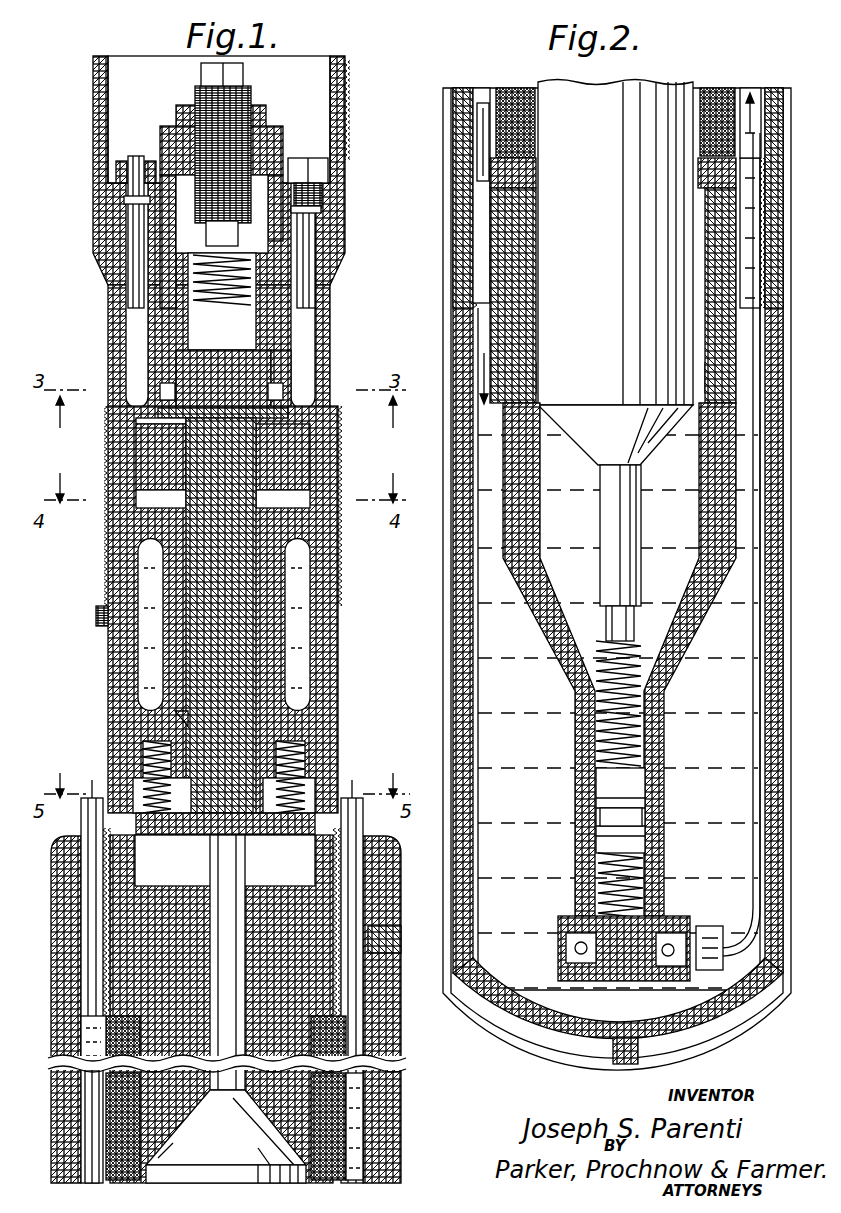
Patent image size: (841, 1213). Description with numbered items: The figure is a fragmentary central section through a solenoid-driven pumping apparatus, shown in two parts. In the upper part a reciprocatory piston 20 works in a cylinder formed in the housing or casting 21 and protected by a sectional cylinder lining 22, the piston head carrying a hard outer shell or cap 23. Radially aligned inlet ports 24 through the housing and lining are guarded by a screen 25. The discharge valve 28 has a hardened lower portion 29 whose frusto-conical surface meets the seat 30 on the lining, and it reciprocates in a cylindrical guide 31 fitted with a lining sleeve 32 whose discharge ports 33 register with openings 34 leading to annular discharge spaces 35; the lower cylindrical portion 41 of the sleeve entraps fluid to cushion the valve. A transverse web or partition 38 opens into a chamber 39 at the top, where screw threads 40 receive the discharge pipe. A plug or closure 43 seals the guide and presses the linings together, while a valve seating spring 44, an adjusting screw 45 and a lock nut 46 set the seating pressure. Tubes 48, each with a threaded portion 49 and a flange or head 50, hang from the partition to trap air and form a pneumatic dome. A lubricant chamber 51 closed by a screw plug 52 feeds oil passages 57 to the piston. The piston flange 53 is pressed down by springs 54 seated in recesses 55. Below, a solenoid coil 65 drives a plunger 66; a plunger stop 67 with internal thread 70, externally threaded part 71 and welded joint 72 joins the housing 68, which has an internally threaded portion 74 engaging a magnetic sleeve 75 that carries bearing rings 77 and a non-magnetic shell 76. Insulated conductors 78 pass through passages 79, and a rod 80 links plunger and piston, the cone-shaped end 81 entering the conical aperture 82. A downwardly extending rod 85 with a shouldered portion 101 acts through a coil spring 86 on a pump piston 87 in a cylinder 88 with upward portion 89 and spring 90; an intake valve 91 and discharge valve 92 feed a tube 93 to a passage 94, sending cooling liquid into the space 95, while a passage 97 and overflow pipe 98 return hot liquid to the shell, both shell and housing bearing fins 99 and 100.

In FIG. 1, the reciprocatory piston 20 is at (185, 497).
In FIG. 1, the housing or casting 21 is at (145, 455).
In FIG. 1, the cylinder lining 22 is at (140, 555).
In FIG. 1, the outer shell or cap 23 is at (256, 438).
In FIG. 1, the inlet ports 24 is at (150, 490).
In FIG. 1, the screen 25 is at (332, 520).
In FIG. 1, the valve 28 is at (190, 357).
In FIG. 1, the lower portion of valve 29 is at (292, 345).
In FIG. 1, the seat 30 is at (132, 418).
In FIG. 1, the cylindrical guide 31 is at (324, 300).
In FIG. 1, the lining sleeve 32 is at (178, 318).
In FIG. 1, the discharge ports or openings 33 is at (305, 358).
In FIG. 1, the openings 34 is at (152, 383).
In FIG. 1, the annular space 35 is at (125, 308).
In FIG. 1, the transverse web or partition 38 is at (314, 188).
In FIG. 1, the chamber 39 is at (219, 119).
In FIG. 1, the screw threads 40 is at (338, 62).
In FIG. 1, the lower cylindrical portion of lining member 41 is at (155, 400).
In FIG. 1, the plug or closure 43 is at (270, 132).
In FIG. 1, the valve seating spring 44 is at (152, 277).
In FIG. 1, the adjusting screw 45 is at (190, 82).
In FIG. 1, the lock nut 46 is at (170, 106).
In FIG. 1, the pipes or tubes 48 is at (120, 233).
In FIG. 1, the threaded portion 49 is at (118, 193).
In FIG. 1, the enlarged flange or head 50 is at (108, 165).
In FIG. 1, the chamber 51 is at (300, 612).
In FIG. 1, the screw plug 52 is at (88, 608).
In FIG. 1, the enlargement or flange 53 is at (290, 828).
In FIG. 1, the springs 54 is at (135, 745).
In FIG. 1, the holes or recesses 55 is at (298, 752).
In FIG. 1, the oil passages 57 is at (175, 705).
In FIG. 1, the coil 65 is at (320, 1172).
In FIG. 2, the coil 65 is at (714, 80).
In FIG. 1, the movable core or plunger 66 is at (212, 1175).
In FIG. 2, the movable core or plunger 66 is at (615, 273).
In FIG. 1, the plunger stop 67 is at (160, 940).
In FIG. 1, the housing 68 is at (396, 1050).
In FIG. 2, the housing 68 is at (776, 112).
In FIG. 1, the internal thread 70 is at (104, 860).
In FIG. 1, the externally threaded part 71 is at (374, 980).
In FIG. 1, the welded joint 72 is at (370, 933).
In FIG. 2, the internally threaded portion 74 is at (770, 192).
In FIG. 2, the sleeve 75 is at (528, 245).
In FIG. 2, the cylindrical shell 76 is at (770, 545).
In FIG. 2, the bearing rings 77 is at (530, 165).
In FIG. 1, the insulated conductors 78 is at (80, 800).
In FIG. 1, the apertures or passages 79 is at (70, 885).
In FIG. 1, the rod 80 is at (237, 898).
In FIG. 1, the cone-shaped end 81 is at (226, 1127).
In FIG. 1, the conical aperture 82 is at (160, 1135).
In FIG. 2, the downwardly extending rod 85 is at (634, 515).
In FIG. 2, the coil spring 86 is at (630, 647).
In FIG. 2, the pump piston 87 is at (621, 816).
In FIG. 2, the cylinder 88 is at (656, 771).
In FIG. 2, the upwardly extending portion 89 is at (512, 523).
In FIG. 2, the spring 90 is at (640, 860).
In FIG. 2, the intake valve 91 is at (556, 942).
In FIG. 2, the discharge valve 92 is at (702, 918).
In FIG. 2, the discharge pipe or tube 93 is at (745, 673).
In FIG. 2, the hole or passage 94 is at (758, 226).
In FIG. 1, the space 95 is at (73, 1020).
In FIG. 2, the space 95 is at (745, 82).
In FIG. 2, the aperture or passage 97 is at (446, 262).
In FIG. 1, the overflow pipe 98 is at (78, 1062).
In FIG. 2, the overflow pipe 98 is at (469, 112).
In FIG. 2, the ribs or fins 99 is at (446, 698).
In FIG. 2, the ribs or fins 100 is at (462, 210).
In FIG. 2, the shouldered portion 101 is at (600, 602).